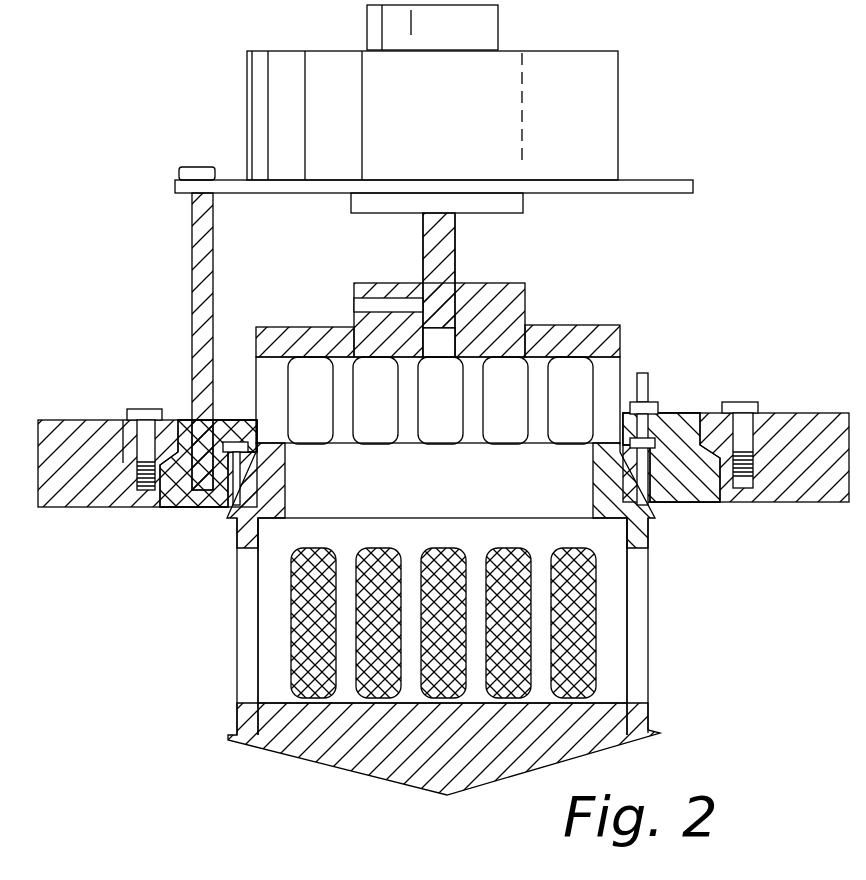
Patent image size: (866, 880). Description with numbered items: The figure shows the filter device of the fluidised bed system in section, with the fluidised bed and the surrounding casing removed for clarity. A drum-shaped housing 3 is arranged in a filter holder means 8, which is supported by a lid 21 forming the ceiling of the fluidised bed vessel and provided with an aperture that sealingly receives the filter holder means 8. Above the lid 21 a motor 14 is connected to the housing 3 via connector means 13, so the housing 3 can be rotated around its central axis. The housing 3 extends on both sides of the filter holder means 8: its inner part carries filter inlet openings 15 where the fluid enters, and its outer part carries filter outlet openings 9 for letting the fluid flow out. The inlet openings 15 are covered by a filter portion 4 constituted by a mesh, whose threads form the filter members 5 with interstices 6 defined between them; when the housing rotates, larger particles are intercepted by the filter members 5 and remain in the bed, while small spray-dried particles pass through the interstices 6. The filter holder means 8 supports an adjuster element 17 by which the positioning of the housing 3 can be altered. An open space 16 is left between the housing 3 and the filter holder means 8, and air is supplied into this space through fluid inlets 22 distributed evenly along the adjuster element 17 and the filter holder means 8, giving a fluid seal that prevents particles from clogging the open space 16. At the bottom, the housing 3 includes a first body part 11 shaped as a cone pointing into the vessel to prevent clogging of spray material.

The housing 3 is at (553, 327).
The filter portion 4 is at (649, 641).
The filter members 5 is at (594, 667).
The interstices 6 is at (303, 643).
The filter holder means 8 is at (713, 427).
The filter outlet openings 9 is at (337, 393).
The first body part 11 is at (496, 758).
The connector means 13 is at (458, 293).
The motor 14 is at (552, 82).
The filter inlet openings 15 is at (595, 587).
The open space 16 is at (655, 501).
The adjuster element 17 is at (674, 427).
The lid 21 is at (796, 437).
The fluid inlets 22 is at (648, 400).